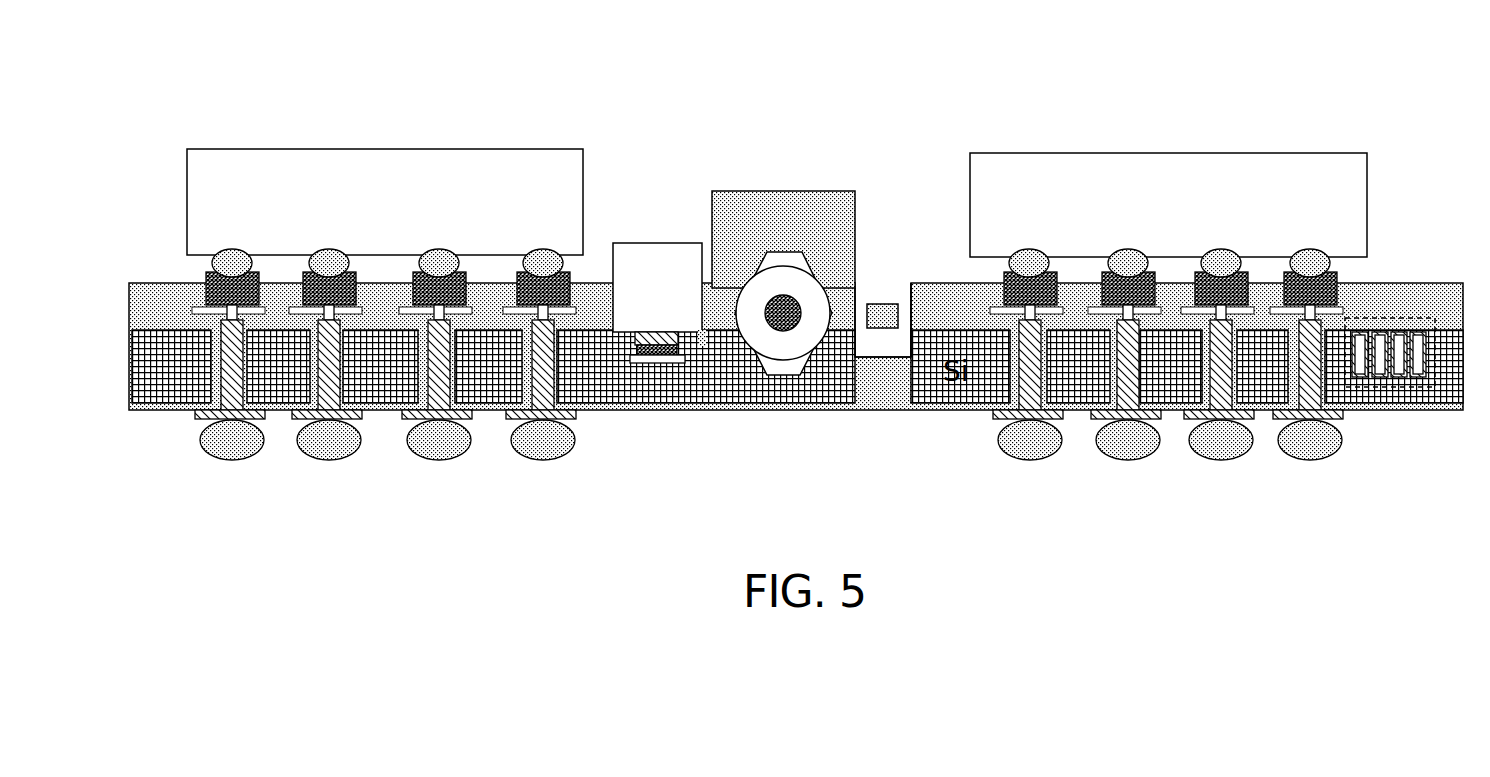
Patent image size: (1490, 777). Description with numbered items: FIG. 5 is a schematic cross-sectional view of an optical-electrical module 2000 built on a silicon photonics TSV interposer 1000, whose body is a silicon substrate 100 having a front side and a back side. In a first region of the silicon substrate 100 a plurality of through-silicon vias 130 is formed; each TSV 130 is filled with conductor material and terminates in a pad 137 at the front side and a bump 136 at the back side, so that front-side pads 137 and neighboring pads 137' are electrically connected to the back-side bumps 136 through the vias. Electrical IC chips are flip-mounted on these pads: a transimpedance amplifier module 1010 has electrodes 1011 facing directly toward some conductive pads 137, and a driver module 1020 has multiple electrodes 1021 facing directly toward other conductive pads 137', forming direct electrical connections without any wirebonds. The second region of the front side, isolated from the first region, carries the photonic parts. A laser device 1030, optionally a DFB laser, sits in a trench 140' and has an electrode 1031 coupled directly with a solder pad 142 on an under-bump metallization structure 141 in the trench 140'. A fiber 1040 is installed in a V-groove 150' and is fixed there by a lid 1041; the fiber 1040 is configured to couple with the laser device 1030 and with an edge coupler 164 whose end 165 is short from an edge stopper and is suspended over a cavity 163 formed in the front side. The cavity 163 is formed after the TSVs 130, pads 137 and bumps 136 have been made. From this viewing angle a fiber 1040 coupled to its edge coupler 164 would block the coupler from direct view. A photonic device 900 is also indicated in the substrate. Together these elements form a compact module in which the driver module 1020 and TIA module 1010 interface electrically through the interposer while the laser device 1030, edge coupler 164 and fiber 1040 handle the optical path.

The optical-electrical module 2000 is at (603, 88).
The package substrate assembly 1000 is at (408, 497).
The silicon substrate 100 is at (167, 389).
The through-silicon via 130 is at (232, 368).
The bump 136 is at (242, 438).
The pad 137 is at (202, 265).
The conductive bump 137' is at (988, 258).
The transimpedance amplifier module 1010 is at (300, 222).
The electrode 1011 is at (226, 257).
The driver module 1020 is at (1107, 220).
The electrode 1021 is at (1033, 260).
The laser device 1030 is at (688, 250).
The electrode 1031 is at (640, 336).
The fiber 1040 is at (803, 330).
The lid 1041 is at (797, 203).
The under-bump metallization structure 141 is at (683, 360).
The solder pad 142 is at (632, 352).
The trench 140' is at (722, 404).
The V-groove 150' is at (783, 355).
The cavity 163 is at (880, 340).
The edge coupler 164 is at (878, 315).
The end 165 is at (899, 307).
The photonic device 900 is at (1427, 387).